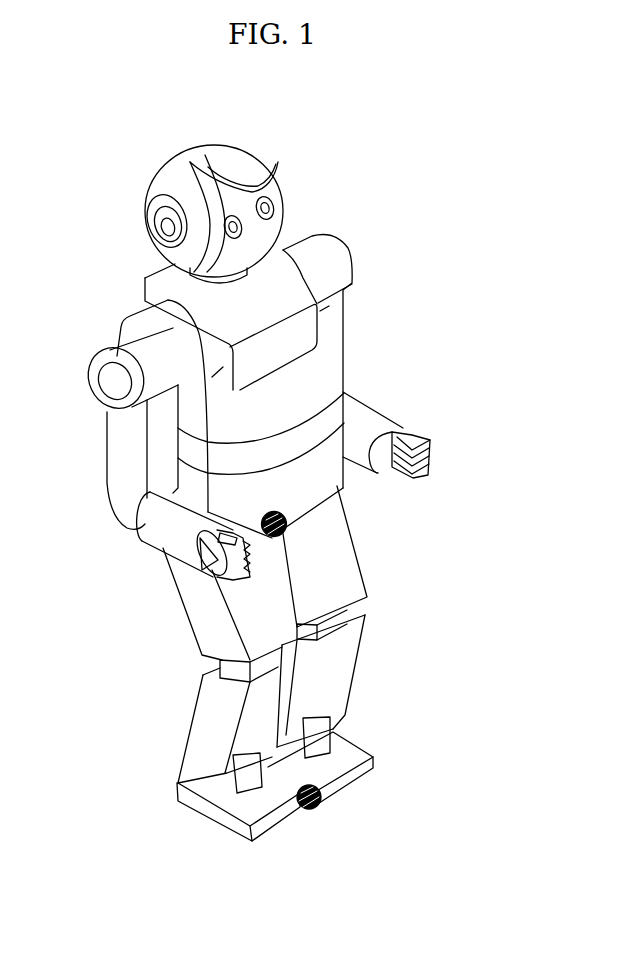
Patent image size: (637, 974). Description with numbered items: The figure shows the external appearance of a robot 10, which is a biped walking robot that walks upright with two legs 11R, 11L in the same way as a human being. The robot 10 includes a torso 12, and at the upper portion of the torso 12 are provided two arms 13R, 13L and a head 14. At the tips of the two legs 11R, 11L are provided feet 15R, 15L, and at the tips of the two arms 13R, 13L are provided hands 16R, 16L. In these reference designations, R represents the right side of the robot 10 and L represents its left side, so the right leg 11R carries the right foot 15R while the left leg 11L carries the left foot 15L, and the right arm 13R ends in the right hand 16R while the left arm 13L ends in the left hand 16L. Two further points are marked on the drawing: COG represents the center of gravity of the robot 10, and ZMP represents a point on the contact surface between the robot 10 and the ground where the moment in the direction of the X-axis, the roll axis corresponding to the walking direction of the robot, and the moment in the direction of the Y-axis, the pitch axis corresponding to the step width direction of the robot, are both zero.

The robot 10 is at (392, 144).
The head 14 is at (283, 190).
The torso 12 is at (332, 348).
The right arm 13R is at (123, 482).
The left arm 13L is at (365, 413).
The right hand 16R is at (205, 571).
The left hand 16L is at (432, 453).
The right leg 11R is at (207, 695).
The left leg 11L is at (362, 648).
The right foot 15R is at (217, 810).
The left foot 15L is at (367, 765).
The center of gravity COG is at (288, 520).
The zero moment point ZMP is at (316, 808).